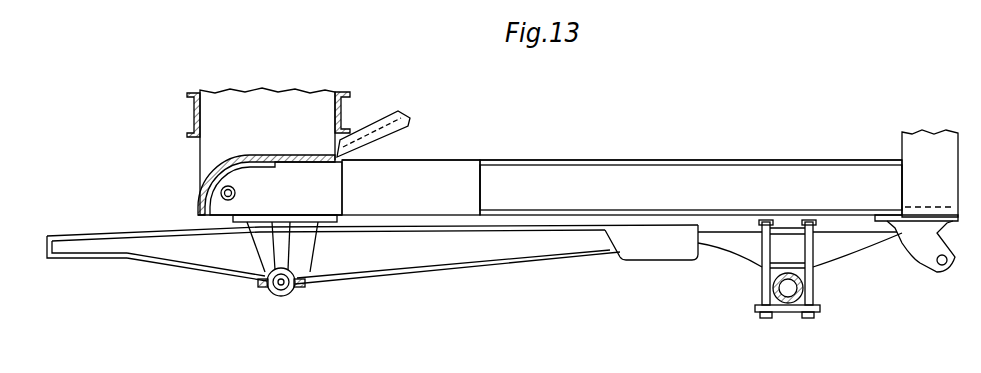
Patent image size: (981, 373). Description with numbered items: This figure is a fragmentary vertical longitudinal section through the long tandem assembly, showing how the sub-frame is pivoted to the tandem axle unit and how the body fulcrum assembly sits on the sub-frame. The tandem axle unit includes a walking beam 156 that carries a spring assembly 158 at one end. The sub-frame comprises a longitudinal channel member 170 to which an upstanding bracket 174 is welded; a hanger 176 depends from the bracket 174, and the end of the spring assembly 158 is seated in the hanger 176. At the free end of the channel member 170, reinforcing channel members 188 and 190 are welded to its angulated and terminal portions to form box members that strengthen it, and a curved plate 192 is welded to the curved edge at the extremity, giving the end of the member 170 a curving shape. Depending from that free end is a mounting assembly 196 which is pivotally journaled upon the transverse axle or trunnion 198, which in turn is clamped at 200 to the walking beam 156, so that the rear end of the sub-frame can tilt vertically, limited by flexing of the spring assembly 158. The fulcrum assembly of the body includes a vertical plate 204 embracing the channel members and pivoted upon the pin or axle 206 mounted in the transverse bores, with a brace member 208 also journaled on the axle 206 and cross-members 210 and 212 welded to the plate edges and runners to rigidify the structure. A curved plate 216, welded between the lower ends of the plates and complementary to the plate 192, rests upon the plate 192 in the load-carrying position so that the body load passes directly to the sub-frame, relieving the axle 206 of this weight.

The walking beam 156 is at (413, 257).
The spring assembly 158 is at (822, 250).
The longitudinal channel member 170 is at (655, 168).
The upstanding bracket 174 is at (922, 142).
The hanger 176 is at (920, 250).
The reinforcing channel member 188 is at (420, 170).
The reinforcing channel member 190 is at (332, 184).
The curved plate 192 is at (208, 195).
The mounting assembly 196 is at (303, 247).
The transverse axle or trunnion 198 is at (290, 292).
The clamp 200 is at (266, 289).
The vertical plate 204 is at (260, 98).
The pin or axle 206 is at (236, 193).
The brace member 208 is at (403, 117).
The cross-member 210 is at (343, 96).
The cross-member 212 is at (187, 94).
The curved plate 216 is at (200, 173).